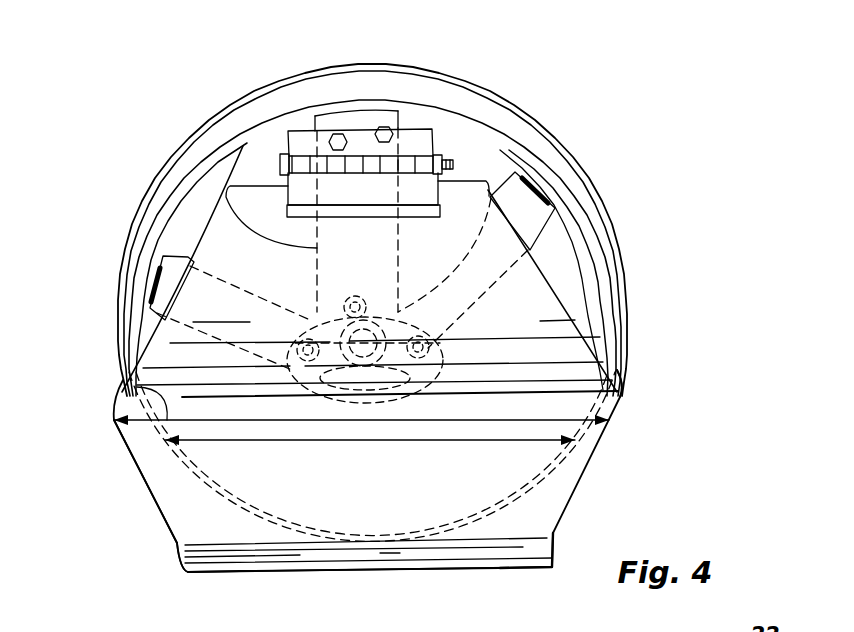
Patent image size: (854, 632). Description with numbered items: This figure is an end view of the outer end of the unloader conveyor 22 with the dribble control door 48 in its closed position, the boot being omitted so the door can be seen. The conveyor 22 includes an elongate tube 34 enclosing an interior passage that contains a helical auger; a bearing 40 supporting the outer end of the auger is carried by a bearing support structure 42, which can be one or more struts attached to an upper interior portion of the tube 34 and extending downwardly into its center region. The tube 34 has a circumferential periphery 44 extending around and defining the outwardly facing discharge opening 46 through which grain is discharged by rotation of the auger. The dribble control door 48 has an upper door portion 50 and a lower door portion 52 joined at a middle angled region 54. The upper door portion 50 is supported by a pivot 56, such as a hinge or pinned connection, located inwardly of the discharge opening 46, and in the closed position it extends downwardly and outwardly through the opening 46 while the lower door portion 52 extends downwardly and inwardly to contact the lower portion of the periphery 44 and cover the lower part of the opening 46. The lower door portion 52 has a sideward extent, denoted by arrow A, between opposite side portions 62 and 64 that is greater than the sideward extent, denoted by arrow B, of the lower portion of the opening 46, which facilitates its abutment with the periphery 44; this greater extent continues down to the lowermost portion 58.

The conveyor 22 is at (507, 91).
The elongate tube 34 is at (548, 133).
The circumferential periphery 44 is at (592, 228).
The discharge opening 46 is at (573, 295).
The pivot 56 is at (362, 156).
The bearing support structure 42 is at (185, 257).
The upper door portion 50 is at (150, 282).
The bearing 40 is at (393, 335).
The dribble control door 48 is at (130, 468).
The lower door portion 52 is at (157, 503).
The side portion 62 is at (177, 543).
The lowermost portion 58 is at (433, 568).
The side portion 64 is at (560, 527).
The middle angled region 54 is at (620, 403).
The arrow A is at (137, 387).
The arrow B is at (260, 441).